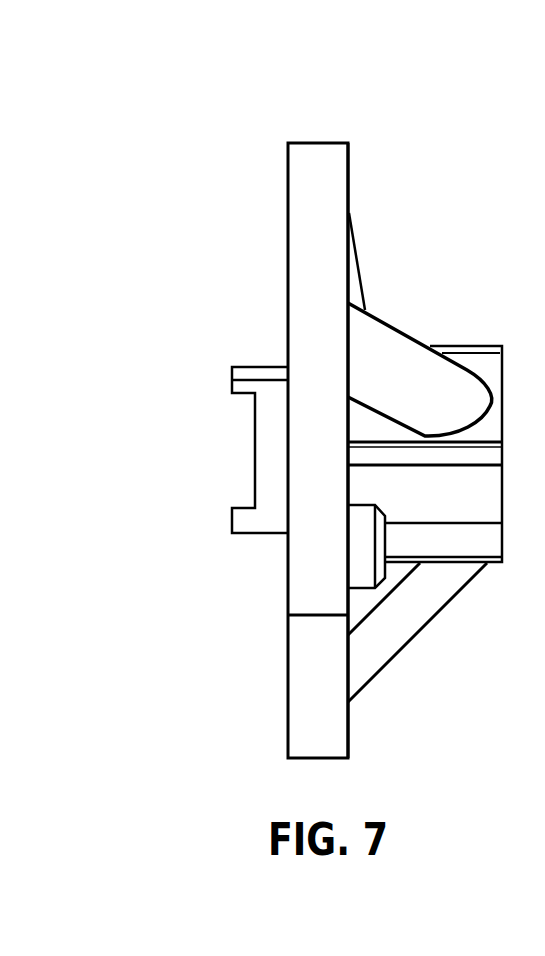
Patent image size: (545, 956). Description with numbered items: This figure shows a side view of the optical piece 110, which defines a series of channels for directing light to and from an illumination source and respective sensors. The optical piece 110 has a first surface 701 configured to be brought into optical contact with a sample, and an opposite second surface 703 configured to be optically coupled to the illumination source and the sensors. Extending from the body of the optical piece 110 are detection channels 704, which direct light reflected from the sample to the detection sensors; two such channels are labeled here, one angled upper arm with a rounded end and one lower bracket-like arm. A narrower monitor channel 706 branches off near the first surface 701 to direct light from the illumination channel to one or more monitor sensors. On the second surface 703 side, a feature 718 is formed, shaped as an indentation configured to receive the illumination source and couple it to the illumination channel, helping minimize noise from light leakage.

The optical piece 110 is at (262, 94).
The first surface 701 is at (362, 191).
The second surface 703 is at (276, 252).
The detection channels 704 is at (400, 344).
The monitor channel 706 is at (357, 287).
The feature 718 is at (255, 462).